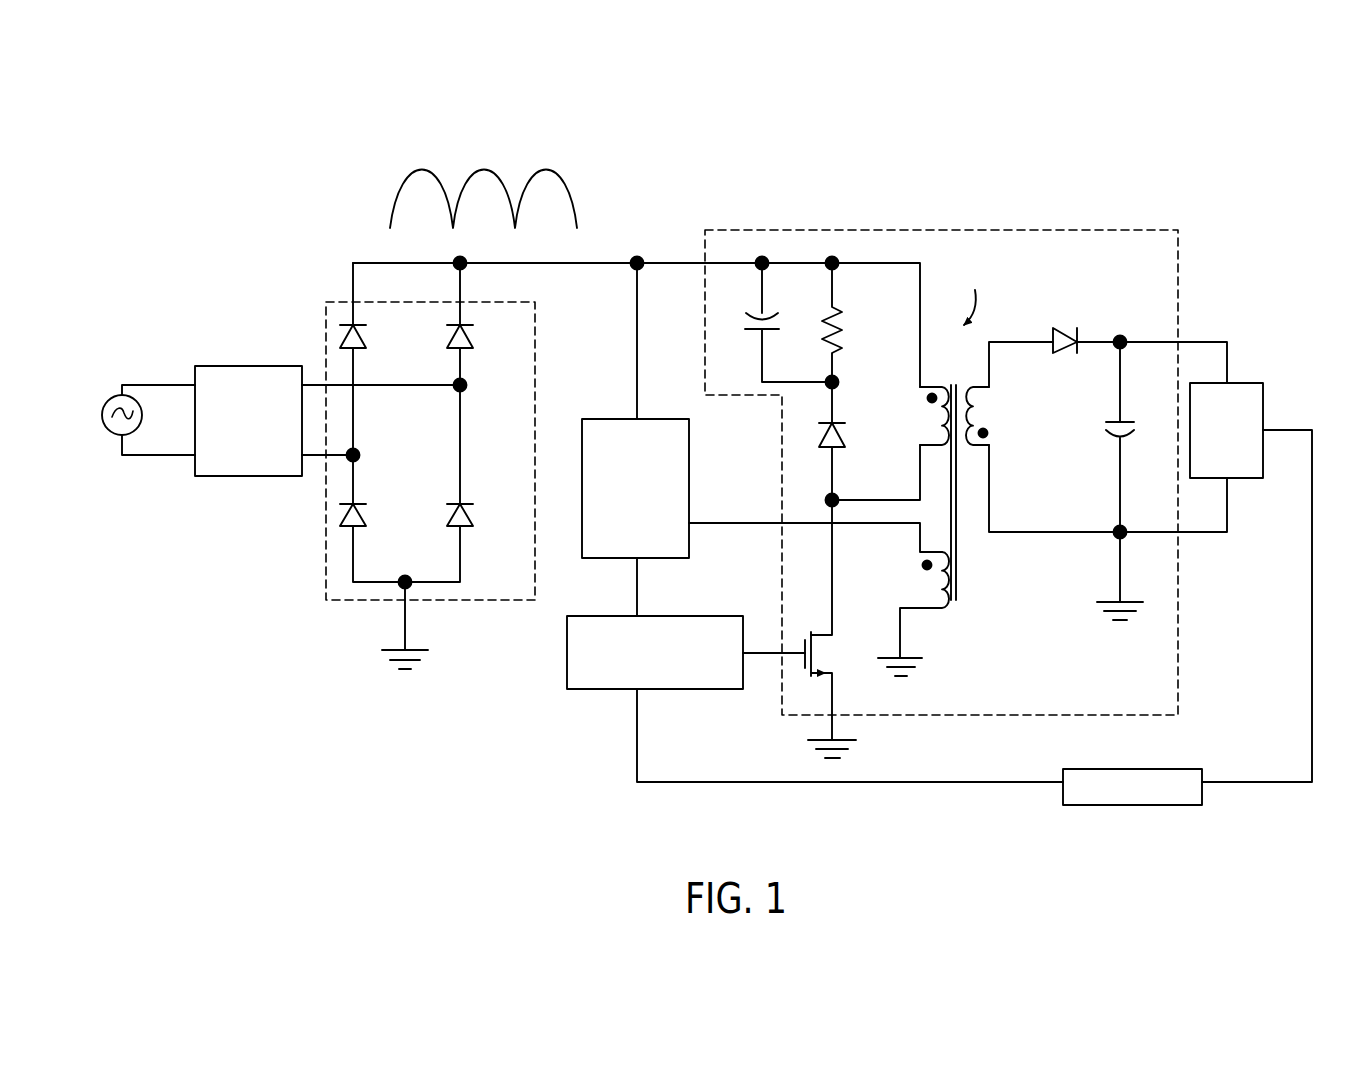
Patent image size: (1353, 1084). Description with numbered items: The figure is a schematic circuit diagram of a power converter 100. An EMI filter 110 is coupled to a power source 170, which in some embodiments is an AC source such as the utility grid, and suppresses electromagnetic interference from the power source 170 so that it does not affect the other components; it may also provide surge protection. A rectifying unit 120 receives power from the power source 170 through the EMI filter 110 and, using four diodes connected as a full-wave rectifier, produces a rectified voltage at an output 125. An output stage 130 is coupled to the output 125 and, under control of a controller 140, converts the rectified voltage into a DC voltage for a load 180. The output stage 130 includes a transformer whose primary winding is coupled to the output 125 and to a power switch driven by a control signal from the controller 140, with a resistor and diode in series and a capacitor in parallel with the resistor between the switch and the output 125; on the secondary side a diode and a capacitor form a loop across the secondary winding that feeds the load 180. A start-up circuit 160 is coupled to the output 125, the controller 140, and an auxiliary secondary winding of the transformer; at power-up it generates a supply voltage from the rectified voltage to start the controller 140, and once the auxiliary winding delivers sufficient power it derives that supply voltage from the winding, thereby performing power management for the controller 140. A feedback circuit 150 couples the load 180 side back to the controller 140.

The power converter 100 is at (1240, 159).
The EMI filter 110 is at (248, 366).
The rectifying unit 120 is at (338, 300).
The output of the rectifying unit 125 is at (638, 258).
The output stage 130 is at (1040, 230).
The controller 140 is at (600, 690).
The feedback circuit 150 is at (1135, 806).
The start-up circuit 160 is at (690, 483).
The power source 170 is at (107, 401).
The load 180 is at (1248, 383).